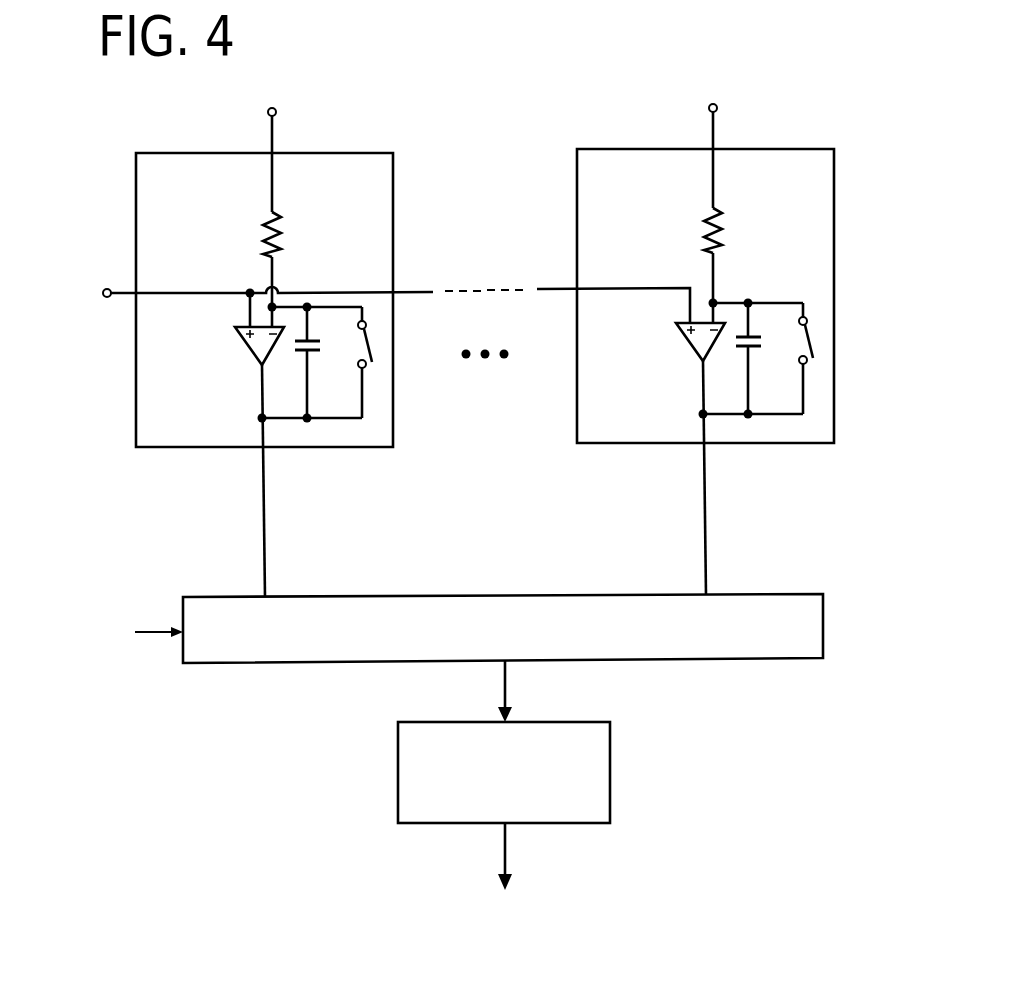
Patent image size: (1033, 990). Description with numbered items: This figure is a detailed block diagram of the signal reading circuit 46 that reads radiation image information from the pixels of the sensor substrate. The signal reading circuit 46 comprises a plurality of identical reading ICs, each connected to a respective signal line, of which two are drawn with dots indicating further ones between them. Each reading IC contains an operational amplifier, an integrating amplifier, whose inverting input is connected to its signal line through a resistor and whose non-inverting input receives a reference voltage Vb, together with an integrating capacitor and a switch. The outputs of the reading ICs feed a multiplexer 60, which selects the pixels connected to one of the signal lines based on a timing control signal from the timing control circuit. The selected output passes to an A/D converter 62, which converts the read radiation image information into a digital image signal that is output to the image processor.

The signal reading circuit 46 is at (888, 70).
The multiplexer 60 is at (757, 594).
The A/D converter 62 is at (587, 722).